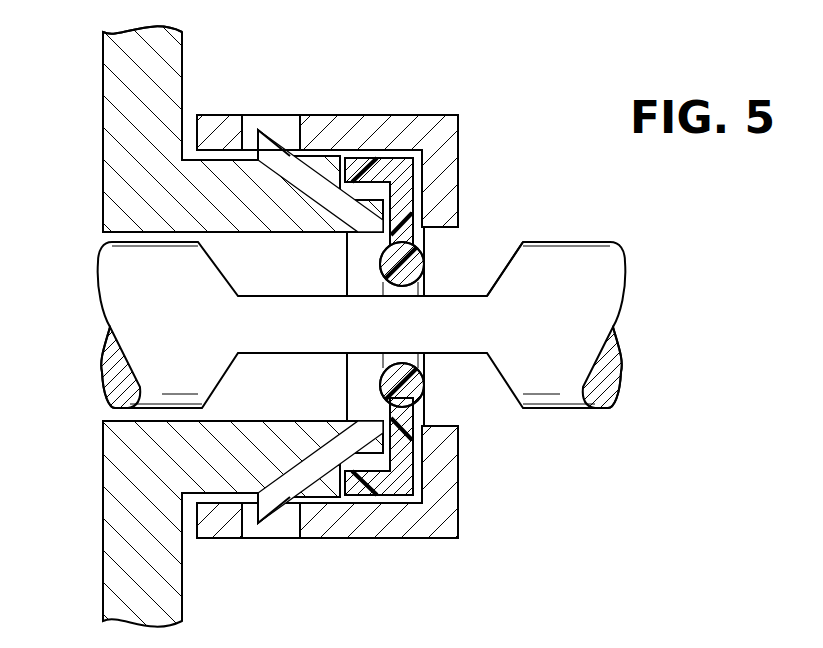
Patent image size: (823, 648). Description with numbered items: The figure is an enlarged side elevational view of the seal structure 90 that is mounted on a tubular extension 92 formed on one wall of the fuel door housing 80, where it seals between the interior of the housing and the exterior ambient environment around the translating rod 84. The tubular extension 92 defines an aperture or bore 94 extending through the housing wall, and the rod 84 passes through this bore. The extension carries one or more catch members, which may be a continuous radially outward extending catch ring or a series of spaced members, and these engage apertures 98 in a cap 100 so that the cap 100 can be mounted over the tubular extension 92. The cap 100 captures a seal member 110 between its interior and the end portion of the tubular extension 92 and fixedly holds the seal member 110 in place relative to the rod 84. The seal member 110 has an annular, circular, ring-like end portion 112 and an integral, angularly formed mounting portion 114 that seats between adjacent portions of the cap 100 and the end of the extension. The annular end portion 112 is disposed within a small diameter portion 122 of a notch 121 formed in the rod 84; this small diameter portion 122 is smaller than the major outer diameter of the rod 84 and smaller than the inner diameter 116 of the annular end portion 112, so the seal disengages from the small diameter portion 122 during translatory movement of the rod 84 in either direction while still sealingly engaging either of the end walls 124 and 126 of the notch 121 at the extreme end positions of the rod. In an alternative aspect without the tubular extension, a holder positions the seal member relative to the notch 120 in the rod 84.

The fuel door housing 80 is at (91, 56).
The translating rod 84 is at (578, 236).
The seal structure 90 is at (479, 64).
The tubular extension 92 is at (207, 190).
The aperture or bore 94 is at (247, 420).
The aperture 98 is at (288, 128).
The cap 100 is at (340, 115).
The seal member 110 is at (424, 447).
The annular end portion 112 is at (426, 380).
The mounting portion 114 is at (393, 498).
The inner diameter 116 is at (388, 385).
The notch 120 is at (471, 363).
The notch 121 is at (440, 278).
The small diameter portion 122 is at (458, 293).
The end wall 124 is at (215, 262).
The end wall 126 is at (512, 258).